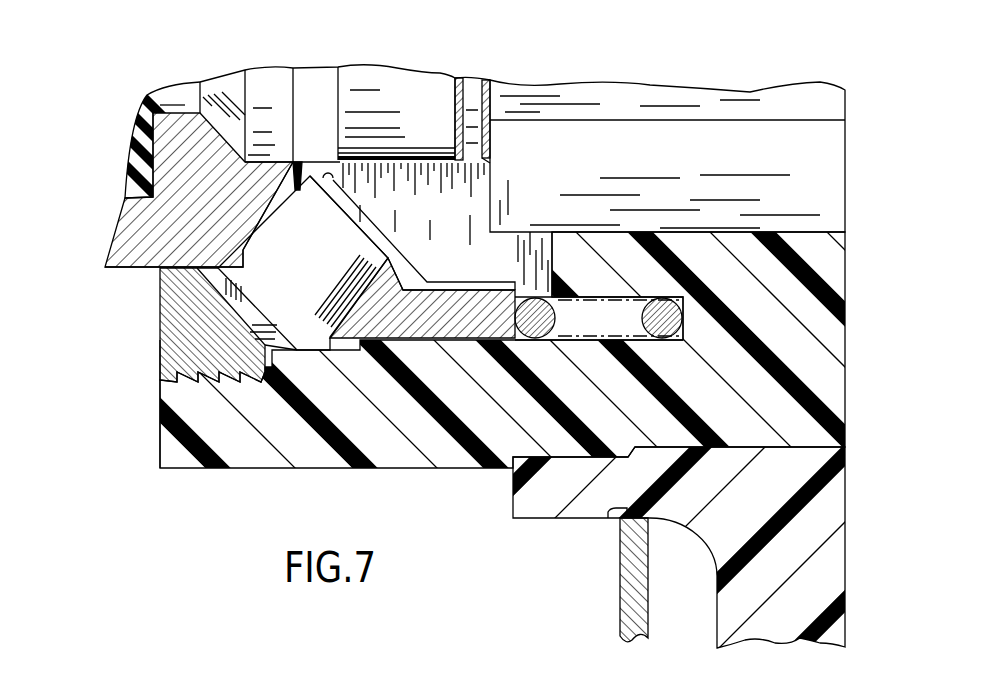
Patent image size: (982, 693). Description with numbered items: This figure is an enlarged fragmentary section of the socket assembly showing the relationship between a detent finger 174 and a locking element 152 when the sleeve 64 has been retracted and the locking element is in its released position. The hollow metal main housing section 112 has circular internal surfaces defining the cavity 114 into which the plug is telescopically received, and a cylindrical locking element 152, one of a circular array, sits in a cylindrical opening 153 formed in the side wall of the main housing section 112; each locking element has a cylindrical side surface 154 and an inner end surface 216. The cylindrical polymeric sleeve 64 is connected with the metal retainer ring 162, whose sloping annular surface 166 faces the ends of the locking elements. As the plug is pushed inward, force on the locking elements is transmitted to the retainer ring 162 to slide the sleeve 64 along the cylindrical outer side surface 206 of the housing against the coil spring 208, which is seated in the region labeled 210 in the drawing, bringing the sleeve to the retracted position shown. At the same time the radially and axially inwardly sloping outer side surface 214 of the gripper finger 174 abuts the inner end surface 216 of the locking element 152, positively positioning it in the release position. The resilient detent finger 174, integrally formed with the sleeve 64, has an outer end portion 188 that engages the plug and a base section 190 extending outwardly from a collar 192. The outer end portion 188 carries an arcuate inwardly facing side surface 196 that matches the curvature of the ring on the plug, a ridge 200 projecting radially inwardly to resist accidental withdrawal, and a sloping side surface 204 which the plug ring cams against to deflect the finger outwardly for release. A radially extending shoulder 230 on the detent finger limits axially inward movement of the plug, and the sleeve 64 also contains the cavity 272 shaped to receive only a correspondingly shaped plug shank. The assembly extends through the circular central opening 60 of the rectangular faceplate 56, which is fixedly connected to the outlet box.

The faceplate 56 is at (619, 600).
The circular central opening 60 is at (612, 512).
The sleeve 64 is at (243, 470).
The main housing section 112 is at (133, 247).
The cavity 114 is at (267, 83).
The locking element 152 is at (293, 162).
The cylindrical opening 153 is at (232, 258).
The cylindrical side surface 154 is at (281, 229).
The retainer ring 162 is at (159, 360).
The sloping annular surface 166 is at (160, 322).
The detent finger 174 is at (453, 78).
The outer end portion 188 is at (405, 82).
The base section 190 is at (522, 231).
The collar 192 is at (611, 257).
The arcuate side surface 196 is at (340, 123).
The ridge 200 is at (480, 88).
The sloping side surface 204 is at (460, 134).
The cylindrical outer side surface 206 is at (432, 352).
The coil spring 208 is at (664, 298).
The seal groove 210 is at (680, 352).
The outer side surface 214 is at (416, 276).
The inner end surface 216 is at (333, 173).
The shoulder 230 is at (497, 197).
The cavity 272 is at (833, 178).